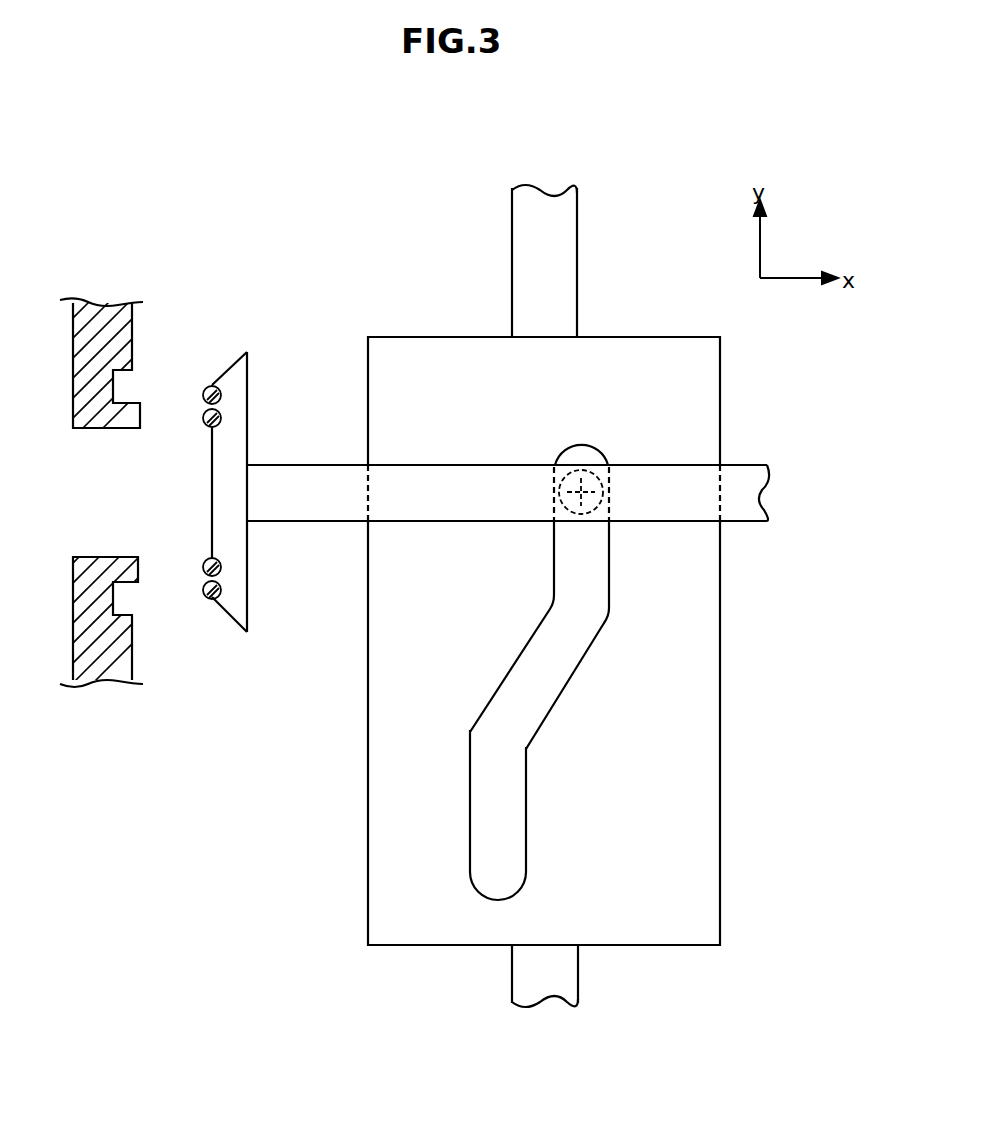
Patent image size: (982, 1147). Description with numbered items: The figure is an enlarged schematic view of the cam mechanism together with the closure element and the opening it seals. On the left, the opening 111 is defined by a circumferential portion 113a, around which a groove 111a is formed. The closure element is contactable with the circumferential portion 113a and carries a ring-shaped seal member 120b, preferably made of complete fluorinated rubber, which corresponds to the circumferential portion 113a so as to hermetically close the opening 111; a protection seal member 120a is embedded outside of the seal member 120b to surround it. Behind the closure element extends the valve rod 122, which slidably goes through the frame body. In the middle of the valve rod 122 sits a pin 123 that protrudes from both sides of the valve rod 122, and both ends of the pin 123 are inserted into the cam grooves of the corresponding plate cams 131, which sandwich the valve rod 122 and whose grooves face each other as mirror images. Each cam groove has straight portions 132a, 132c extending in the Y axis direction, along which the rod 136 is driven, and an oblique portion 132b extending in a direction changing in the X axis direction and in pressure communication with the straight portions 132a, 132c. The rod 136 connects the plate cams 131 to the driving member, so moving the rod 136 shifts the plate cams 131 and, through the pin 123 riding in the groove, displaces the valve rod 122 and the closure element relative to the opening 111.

The opening 111 is at (100, 429).
The groove 111a is at (132, 376).
The circumferential portion 113a is at (142, 420).
The protection seal member 120a is at (212, 386).
The seal member 120b is at (212, 427).
The valve rod 122 is at (300, 505).
The pin 123 is at (580, 480).
The plate cam 131 is at (693, 796).
The straight portion 132a is at (602, 445).
The oblique portion 132b is at (647, 627).
The straight portion 132c is at (463, 737).
The rod 136 is at (553, 258).